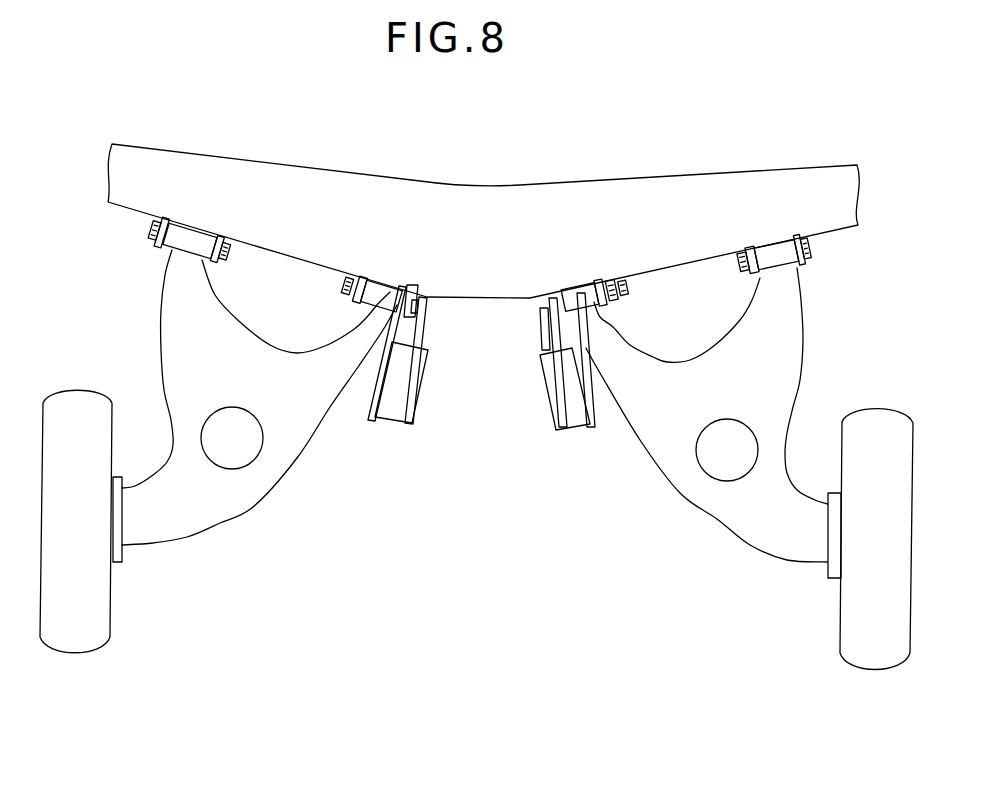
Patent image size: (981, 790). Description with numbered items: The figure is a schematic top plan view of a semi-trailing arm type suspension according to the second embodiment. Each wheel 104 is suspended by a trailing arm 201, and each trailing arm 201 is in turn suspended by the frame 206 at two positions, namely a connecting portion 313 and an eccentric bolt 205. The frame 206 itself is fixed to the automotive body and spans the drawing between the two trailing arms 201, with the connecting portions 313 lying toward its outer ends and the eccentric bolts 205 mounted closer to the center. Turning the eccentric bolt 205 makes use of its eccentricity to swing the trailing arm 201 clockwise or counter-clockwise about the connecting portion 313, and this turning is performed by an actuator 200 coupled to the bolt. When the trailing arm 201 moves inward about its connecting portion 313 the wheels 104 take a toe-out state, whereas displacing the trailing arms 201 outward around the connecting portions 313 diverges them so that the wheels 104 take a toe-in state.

The wheel 104 is at (102, 618).
The actuator 200 is at (403, 417).
The trailing arm 201 is at (293, 442).
The eccentric bolt 205 is at (425, 316).
The frame 206 is at (812, 184).
The connecting portion 313 is at (182, 240).